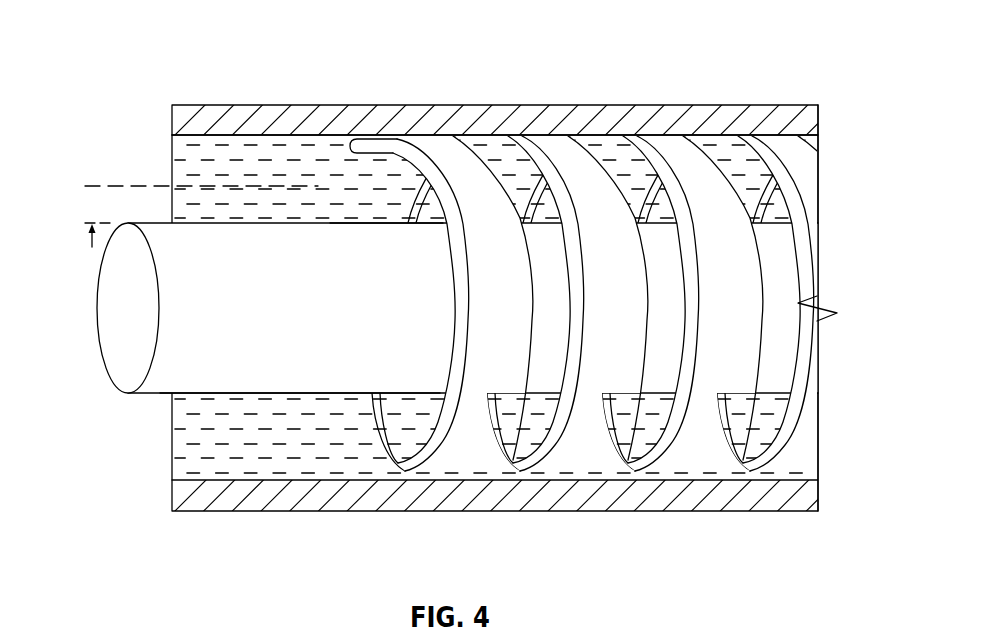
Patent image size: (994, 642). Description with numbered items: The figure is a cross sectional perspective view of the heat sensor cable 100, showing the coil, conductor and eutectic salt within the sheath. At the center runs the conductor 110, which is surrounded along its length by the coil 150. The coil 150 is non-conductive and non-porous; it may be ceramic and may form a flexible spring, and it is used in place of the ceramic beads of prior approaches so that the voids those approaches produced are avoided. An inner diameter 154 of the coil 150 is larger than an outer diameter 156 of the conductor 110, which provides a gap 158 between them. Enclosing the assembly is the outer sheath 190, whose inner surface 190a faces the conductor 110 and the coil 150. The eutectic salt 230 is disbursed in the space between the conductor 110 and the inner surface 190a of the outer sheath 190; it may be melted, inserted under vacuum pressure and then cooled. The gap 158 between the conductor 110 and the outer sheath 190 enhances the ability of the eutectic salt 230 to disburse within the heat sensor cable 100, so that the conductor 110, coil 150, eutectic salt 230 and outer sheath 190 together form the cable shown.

The heat sensor cable 100 is at (166, 49).
The conductor 110 is at (310, 375).
The coil 150 is at (655, 405).
The inner diameter of the coil 154 is at (368, 219).
The outer diameter of the conductor 156 is at (255, 394).
The gap 158 is at (90, 187).
The outer sheath 190 is at (783, 115).
The inner surface of the outer sheath 190a is at (664, 136).
The eutectic salt 230 is at (243, 154).